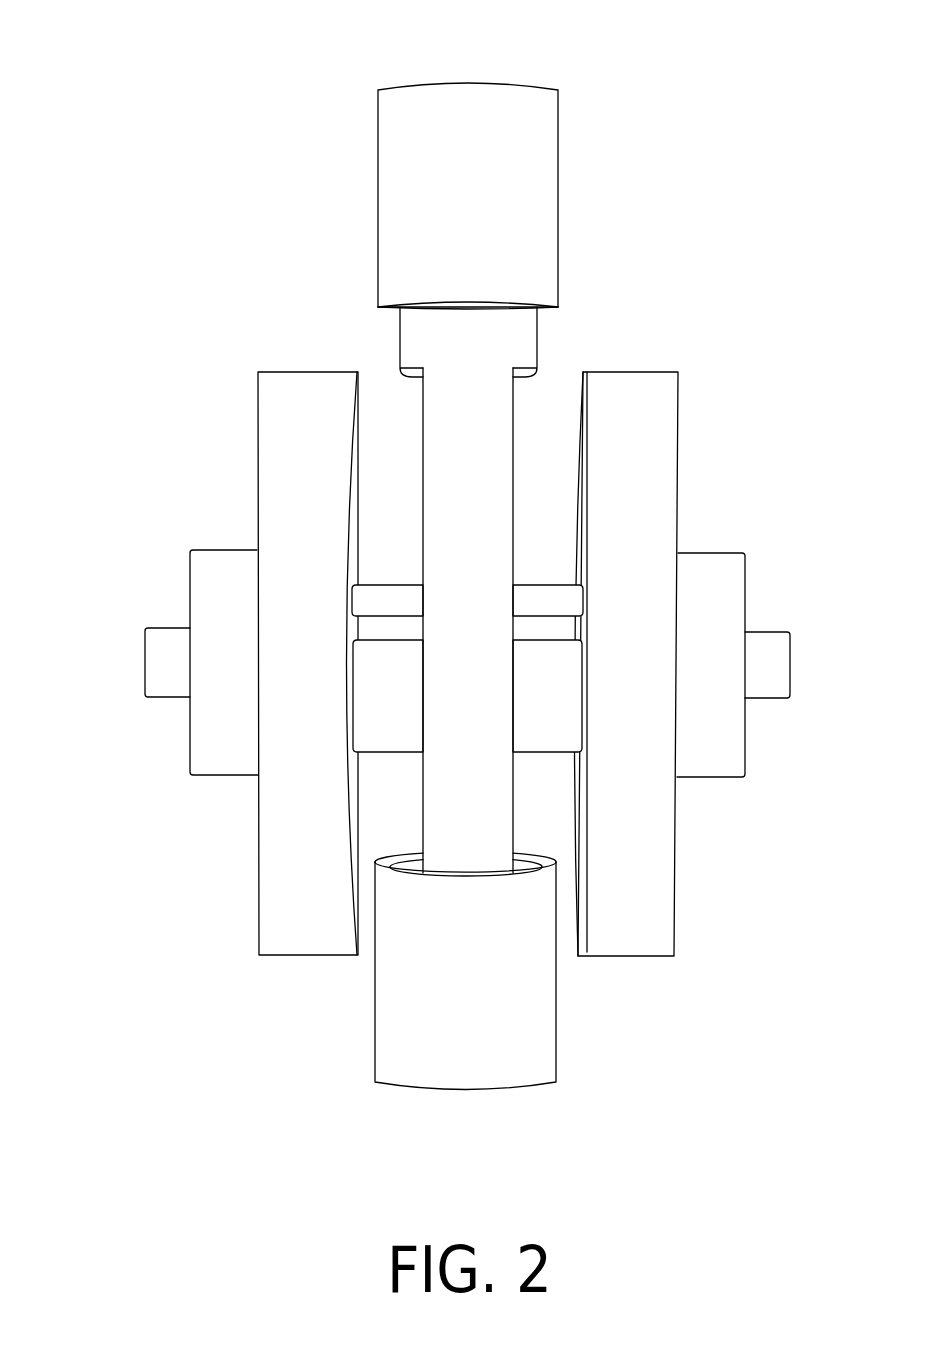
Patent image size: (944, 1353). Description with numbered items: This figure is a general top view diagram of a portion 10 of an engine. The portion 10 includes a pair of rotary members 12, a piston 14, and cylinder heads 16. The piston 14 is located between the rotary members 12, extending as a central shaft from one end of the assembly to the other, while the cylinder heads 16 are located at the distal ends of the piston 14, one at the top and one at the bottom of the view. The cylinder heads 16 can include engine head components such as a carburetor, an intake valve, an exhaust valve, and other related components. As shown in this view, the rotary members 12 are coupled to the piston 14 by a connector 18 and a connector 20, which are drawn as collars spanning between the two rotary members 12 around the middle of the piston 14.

The portion of an engine 10 is at (97, 97).
The rotary members 12 is at (257, 438).
The piston 14 is at (513, 490).
The cylinder heads 16 is at (378, 185).
The connector 18 is at (380, 585).
The connector 20 is at (535, 752).